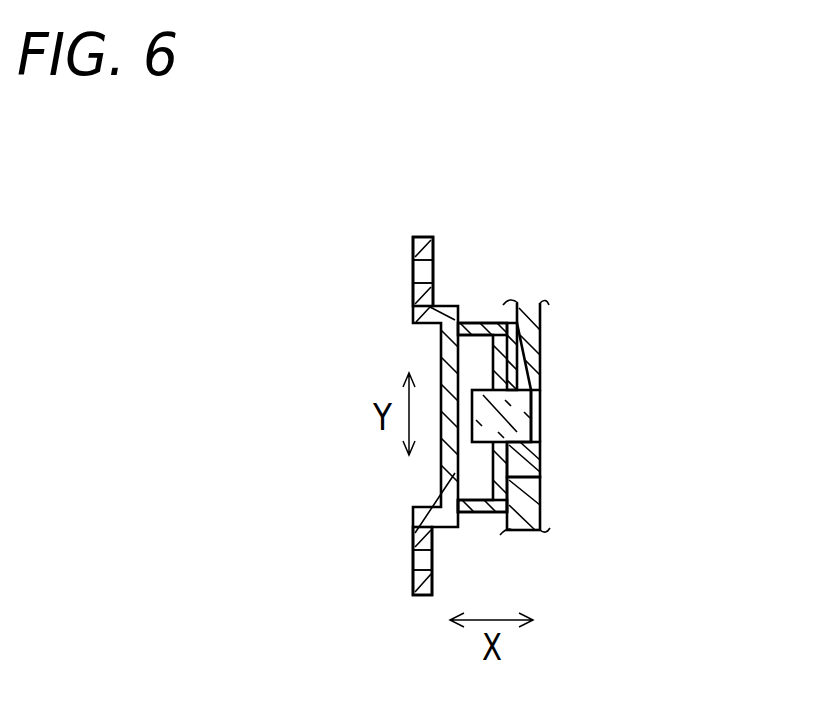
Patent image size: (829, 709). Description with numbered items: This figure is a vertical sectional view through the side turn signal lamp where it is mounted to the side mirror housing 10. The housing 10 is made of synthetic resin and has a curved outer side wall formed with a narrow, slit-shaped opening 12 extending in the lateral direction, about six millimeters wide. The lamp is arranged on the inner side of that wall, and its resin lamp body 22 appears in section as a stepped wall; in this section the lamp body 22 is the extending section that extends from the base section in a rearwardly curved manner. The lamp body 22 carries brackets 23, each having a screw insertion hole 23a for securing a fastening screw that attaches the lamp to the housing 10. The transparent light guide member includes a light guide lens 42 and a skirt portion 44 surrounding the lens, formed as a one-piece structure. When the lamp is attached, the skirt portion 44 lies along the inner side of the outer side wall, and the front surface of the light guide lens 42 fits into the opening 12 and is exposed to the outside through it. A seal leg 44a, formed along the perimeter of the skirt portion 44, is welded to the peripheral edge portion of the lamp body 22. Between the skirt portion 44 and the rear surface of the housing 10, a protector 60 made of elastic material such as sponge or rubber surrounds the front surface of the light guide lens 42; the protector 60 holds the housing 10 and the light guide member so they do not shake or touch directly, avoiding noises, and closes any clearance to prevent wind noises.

The lamp body 22 is at (443, 362).
The bracket 23 is at (427, 237).
The screw insertion hole 23a is at (415, 267).
The skirt portion 44 is at (531, 477).
The seal leg 44a is at (477, 322).
The light guide lens 42 is at (533, 402).
The opening 12 is at (533, 412).
The protector 60 is at (538, 490).
The side mirror housing 10 is at (540, 518).